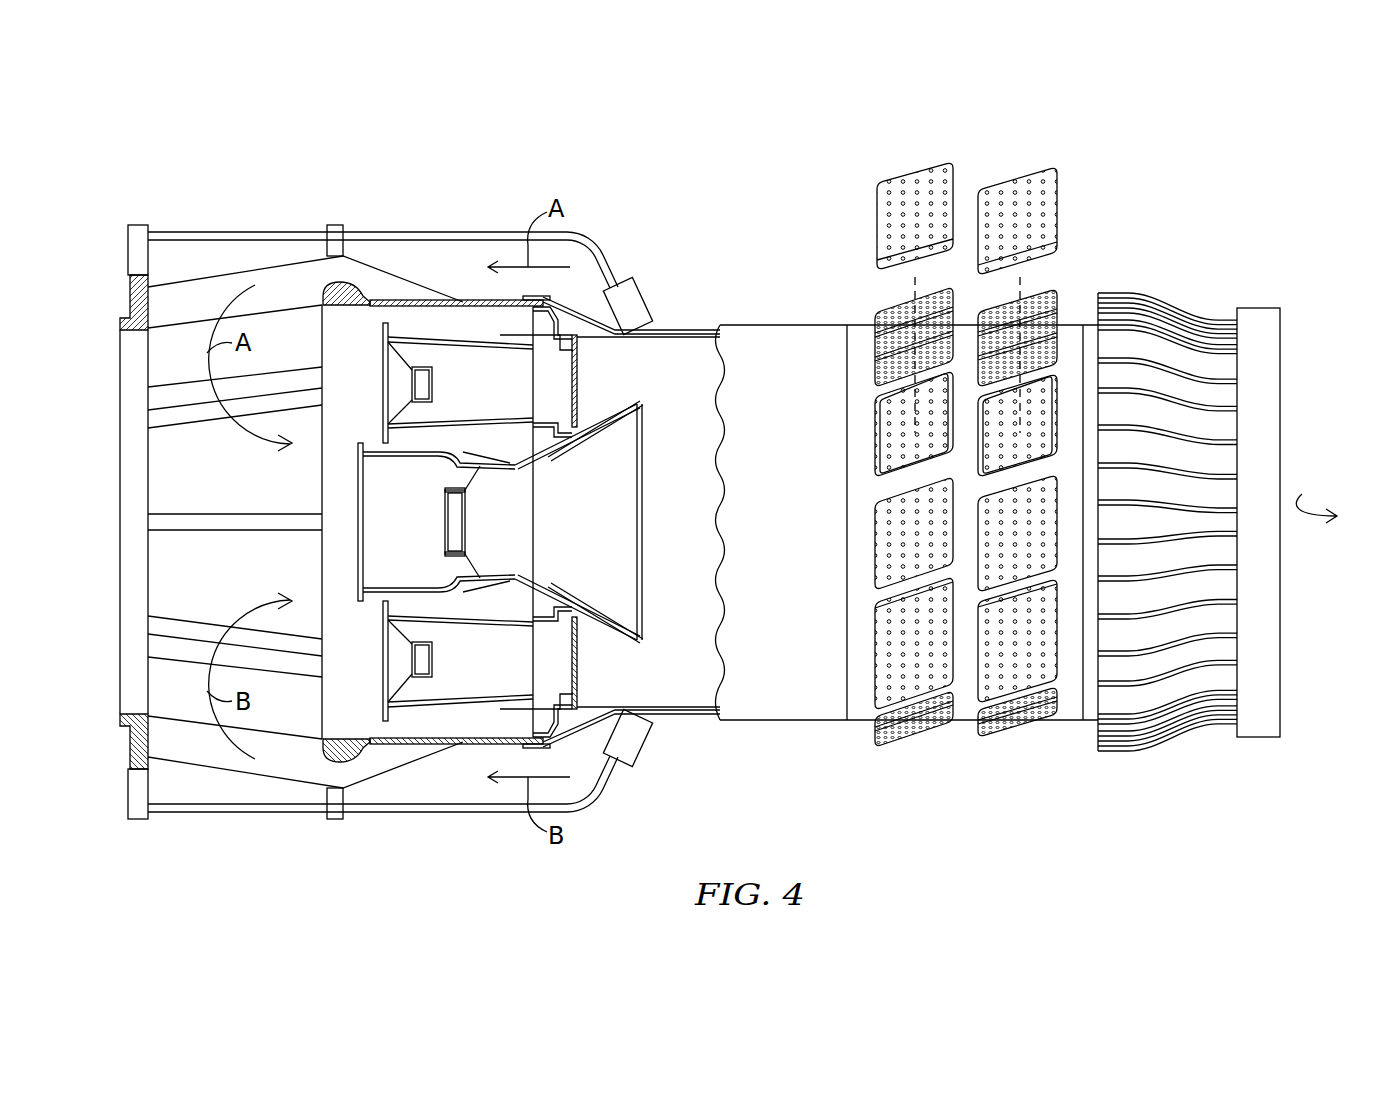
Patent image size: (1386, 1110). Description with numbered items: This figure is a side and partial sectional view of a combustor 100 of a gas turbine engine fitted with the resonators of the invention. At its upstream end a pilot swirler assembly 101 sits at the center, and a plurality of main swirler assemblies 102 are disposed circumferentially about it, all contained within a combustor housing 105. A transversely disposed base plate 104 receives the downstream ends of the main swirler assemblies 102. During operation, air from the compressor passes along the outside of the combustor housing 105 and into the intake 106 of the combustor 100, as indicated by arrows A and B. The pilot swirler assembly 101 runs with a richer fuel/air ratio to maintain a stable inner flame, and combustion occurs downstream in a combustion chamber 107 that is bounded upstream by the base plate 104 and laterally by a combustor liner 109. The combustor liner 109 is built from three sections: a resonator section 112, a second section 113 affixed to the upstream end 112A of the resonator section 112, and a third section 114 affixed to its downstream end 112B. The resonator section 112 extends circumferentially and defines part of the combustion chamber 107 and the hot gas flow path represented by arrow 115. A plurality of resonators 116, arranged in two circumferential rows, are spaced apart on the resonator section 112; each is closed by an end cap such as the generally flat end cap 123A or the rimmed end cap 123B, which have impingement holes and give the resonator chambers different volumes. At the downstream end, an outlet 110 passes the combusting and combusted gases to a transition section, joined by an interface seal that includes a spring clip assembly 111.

The combustor 100 is at (497, 173).
The pilot swirler assembly 101 is at (421, 535).
The main swirler assemblies 102 is at (500, 392).
The base plate 104 is at (580, 382).
The combustor housing 105 is at (395, 300).
The intake 106 is at (233, 491).
The combustion chamber 107 is at (695, 536).
The combustor liner 109 is at (676, 325).
The outlet 110 is at (1283, 398).
The spring clip assembly 111 is at (1192, 300).
The resonator section 112 is at (1058, 808).
The upstream end of the resonator section 112A is at (862, 320).
The downstream end of the resonator section 112B is at (1068, 725).
The second section 113 is at (763, 313).
The third section 114 is at (1217, 760).
The hot flow gas path arrow 115 is at (1336, 496).
The resonators 116 is at (902, 768).
The end cap 123A is at (1035, 165).
The end cap 123B is at (900, 173).